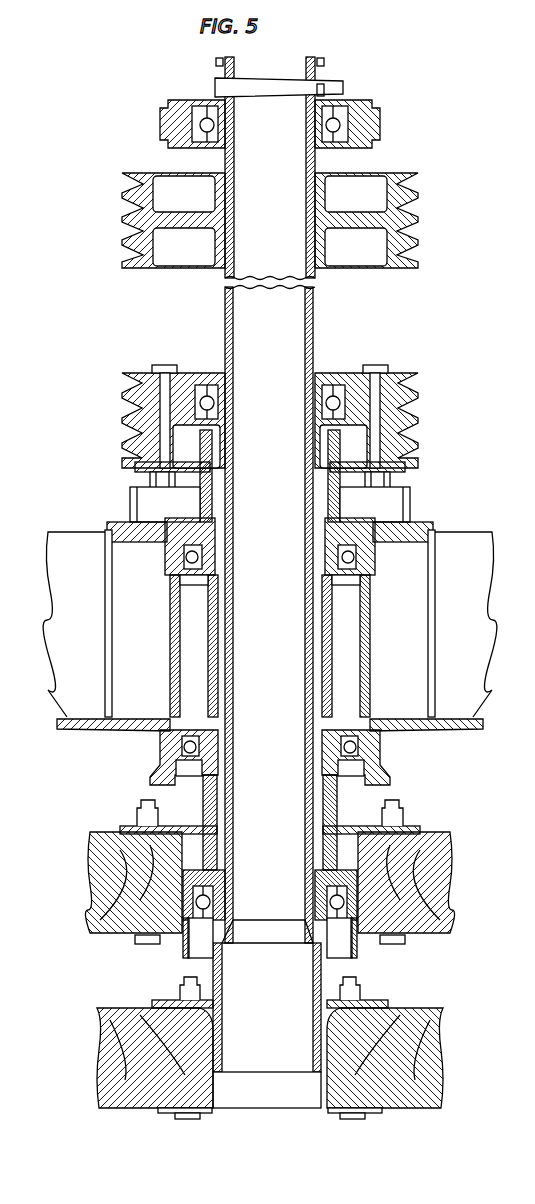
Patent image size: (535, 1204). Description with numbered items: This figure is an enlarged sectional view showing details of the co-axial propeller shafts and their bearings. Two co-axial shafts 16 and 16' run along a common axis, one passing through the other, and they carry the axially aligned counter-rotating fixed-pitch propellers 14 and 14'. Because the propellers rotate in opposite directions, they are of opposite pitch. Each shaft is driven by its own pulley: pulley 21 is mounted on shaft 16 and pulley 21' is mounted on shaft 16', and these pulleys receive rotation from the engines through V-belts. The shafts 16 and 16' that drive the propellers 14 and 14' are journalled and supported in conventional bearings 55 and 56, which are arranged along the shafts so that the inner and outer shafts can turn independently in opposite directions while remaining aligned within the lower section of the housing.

The co-axial shaft 16' is at (279, 160).
The co-axial shaft 16 is at (304, 697).
The pulley 21' is at (282, 207).
The pulley 21 is at (276, 420).
The bearing 55 is at (357, 558).
The bearing 56 is at (366, 133).
The propeller 14 is at (275, 872).
The propeller 14' is at (281, 1048).